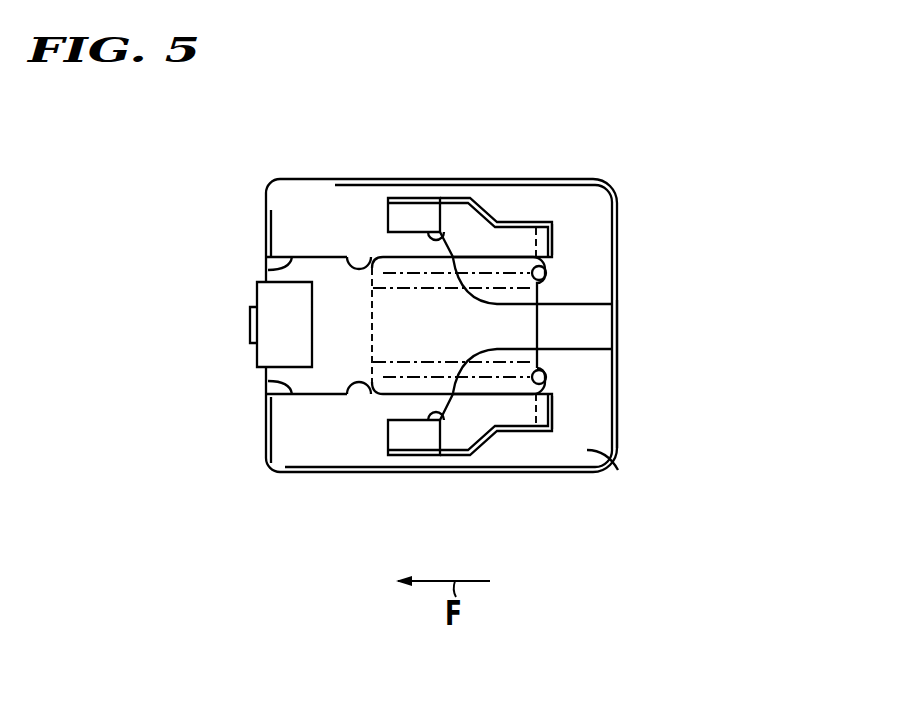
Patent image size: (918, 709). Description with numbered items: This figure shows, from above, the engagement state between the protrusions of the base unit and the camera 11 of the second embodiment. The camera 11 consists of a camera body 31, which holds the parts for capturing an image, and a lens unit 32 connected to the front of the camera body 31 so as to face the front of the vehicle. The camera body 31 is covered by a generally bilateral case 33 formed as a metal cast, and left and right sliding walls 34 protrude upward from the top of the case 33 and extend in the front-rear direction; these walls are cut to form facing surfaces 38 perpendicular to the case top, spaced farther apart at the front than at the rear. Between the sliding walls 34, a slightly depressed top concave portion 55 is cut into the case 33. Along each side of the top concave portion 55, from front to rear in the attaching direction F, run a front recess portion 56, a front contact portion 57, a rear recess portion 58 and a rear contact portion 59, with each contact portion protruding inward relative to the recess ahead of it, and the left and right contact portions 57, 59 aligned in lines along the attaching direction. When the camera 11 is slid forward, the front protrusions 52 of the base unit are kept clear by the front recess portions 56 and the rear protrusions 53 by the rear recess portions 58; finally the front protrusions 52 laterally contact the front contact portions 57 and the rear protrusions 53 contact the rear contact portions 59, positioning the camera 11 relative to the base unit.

The camera 11 is at (622, 212).
The camera body 31 is at (622, 437).
The lens unit 32 is at (258, 300).
The case 33 is at (615, 470).
The sliding wall 34 is at (470, 198).
The facing surface 38 is at (433, 198).
The front protrusion 52 is at (375, 252).
The rear protrusion 53 is at (549, 222).
The top concave portion 55 is at (318, 258).
The front recess portion 56 is at (267, 267).
The front contact portion 57 is at (351, 262).
The rear recess portion 58 is at (612, 304).
The rear contact portion 59 is at (547, 281).